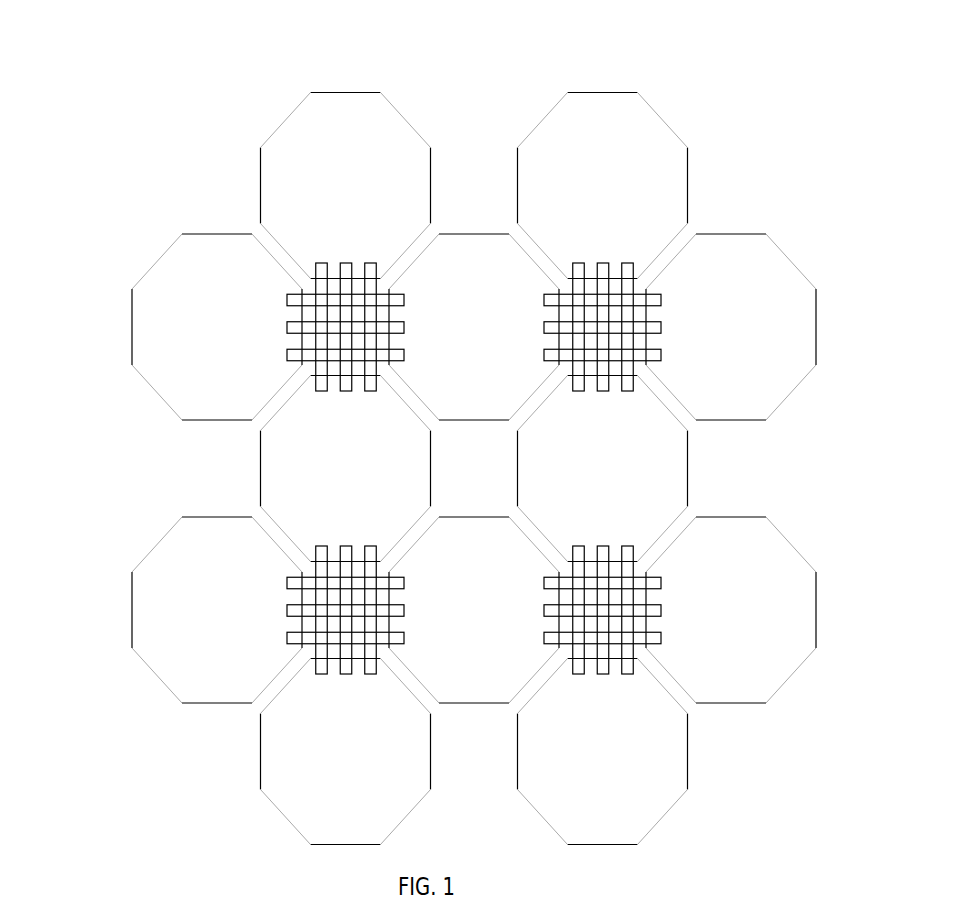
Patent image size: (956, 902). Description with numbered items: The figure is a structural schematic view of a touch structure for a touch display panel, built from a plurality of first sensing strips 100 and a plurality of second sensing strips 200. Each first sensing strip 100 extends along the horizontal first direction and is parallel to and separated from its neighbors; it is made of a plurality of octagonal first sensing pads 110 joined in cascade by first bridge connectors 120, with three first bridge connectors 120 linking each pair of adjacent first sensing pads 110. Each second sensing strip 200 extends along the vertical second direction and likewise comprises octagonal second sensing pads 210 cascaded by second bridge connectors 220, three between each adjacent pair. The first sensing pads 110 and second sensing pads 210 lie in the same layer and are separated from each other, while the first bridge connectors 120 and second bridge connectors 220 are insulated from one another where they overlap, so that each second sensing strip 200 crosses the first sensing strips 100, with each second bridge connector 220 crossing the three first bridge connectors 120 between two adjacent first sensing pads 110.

The first sensing strip 100 is at (423, 428).
The first sensing pad 110 is at (158, 348).
The first bridge connector 120 is at (297, 357).
The second sensing strip 200 is at (433, 428).
The second sensing pad 210 is at (373, 133).
The second bridge connector 220 is at (373, 266).